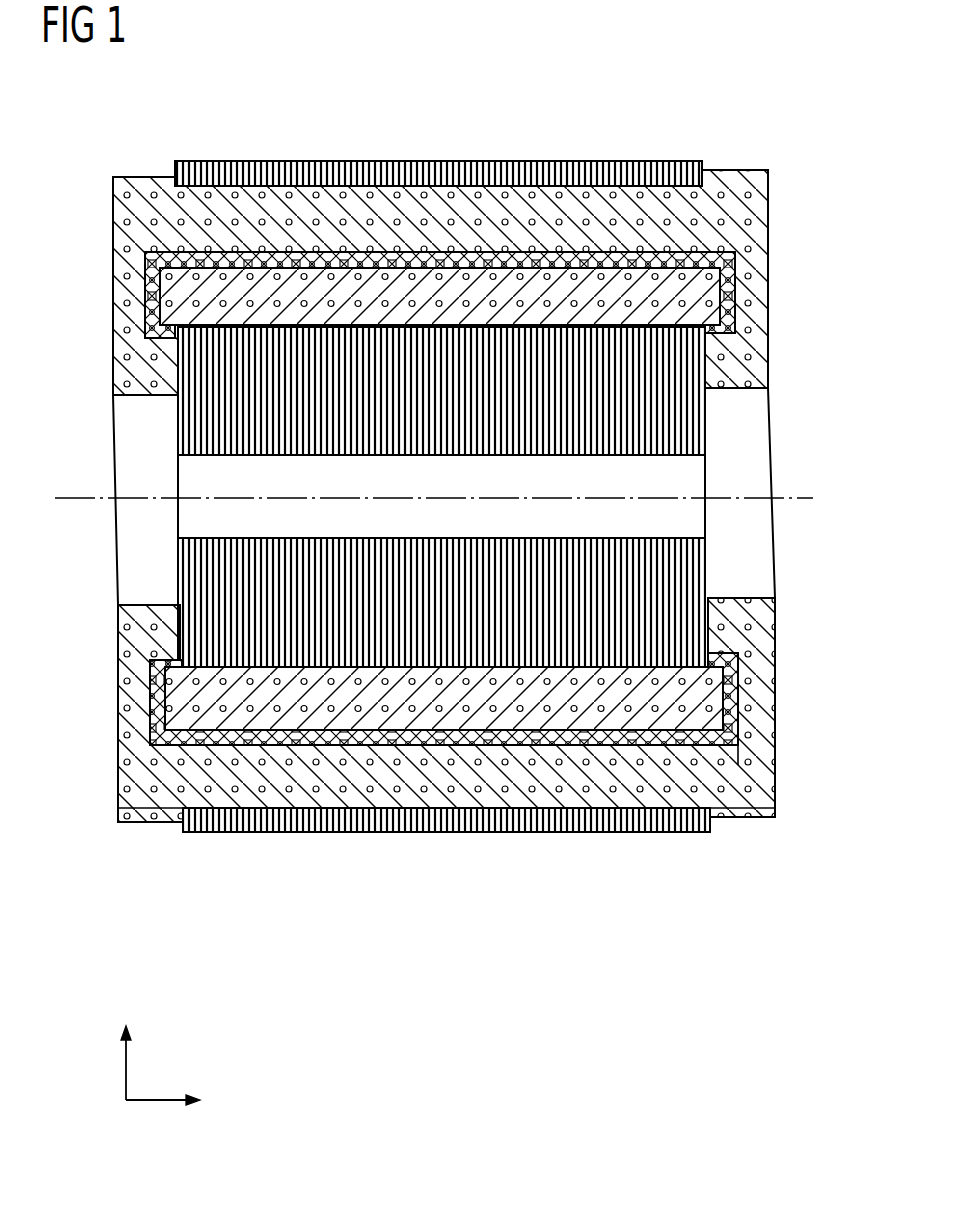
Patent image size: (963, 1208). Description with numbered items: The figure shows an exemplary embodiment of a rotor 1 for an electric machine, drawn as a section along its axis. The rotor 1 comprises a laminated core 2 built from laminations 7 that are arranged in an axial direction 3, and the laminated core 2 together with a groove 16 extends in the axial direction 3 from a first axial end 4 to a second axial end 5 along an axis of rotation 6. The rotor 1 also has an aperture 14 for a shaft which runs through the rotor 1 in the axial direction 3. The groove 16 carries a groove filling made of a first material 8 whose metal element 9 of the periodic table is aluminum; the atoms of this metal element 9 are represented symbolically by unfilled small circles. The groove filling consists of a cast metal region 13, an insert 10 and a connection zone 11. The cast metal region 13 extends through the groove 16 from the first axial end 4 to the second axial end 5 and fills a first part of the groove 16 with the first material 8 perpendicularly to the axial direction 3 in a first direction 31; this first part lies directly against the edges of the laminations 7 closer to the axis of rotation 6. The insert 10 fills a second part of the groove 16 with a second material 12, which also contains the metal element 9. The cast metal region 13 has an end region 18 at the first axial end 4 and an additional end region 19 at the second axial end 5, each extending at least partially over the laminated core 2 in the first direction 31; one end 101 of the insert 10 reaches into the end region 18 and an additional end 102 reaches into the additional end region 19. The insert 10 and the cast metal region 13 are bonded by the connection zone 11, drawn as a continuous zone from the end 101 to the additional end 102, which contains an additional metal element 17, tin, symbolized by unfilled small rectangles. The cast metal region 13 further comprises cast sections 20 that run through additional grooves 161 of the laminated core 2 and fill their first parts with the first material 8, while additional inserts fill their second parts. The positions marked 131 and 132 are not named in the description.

The rotor 1 is at (594, 91).
The laminated core 2 is at (705, 430).
The axial direction 3 is at (150, 1100).
The first axial end 4 is at (185, 845).
The second axial end 5 is at (708, 840).
The axis of rotation 6 is at (72, 498).
The laminations 7 is at (690, 580).
The first material 8 is at (290, 780).
The metal element 9 is at (362, 780).
The insert 10 is at (145, 262).
The connection zone 11 is at (250, 253).
The second material 12 is at (292, 283).
The cast metal region 13 is at (118, 665).
The aperture 14 is at (190, 515).
The groove 16 is at (490, 181).
The additional metal element 17 is at (417, 250).
The end region 18 is at (168, 177).
The additional end region 19 is at (712, 167).
The cast sections 20 is at (570, 810).
The first direction 31 is at (126, 1074).
The end of the insert 101 is at (148, 246).
The additional end of the insert 102 is at (730, 237).
The first housing end 131 is at (128, 838).
The second housing end 132 is at (770, 830).
The additional grooves 161 is at (185, 805).